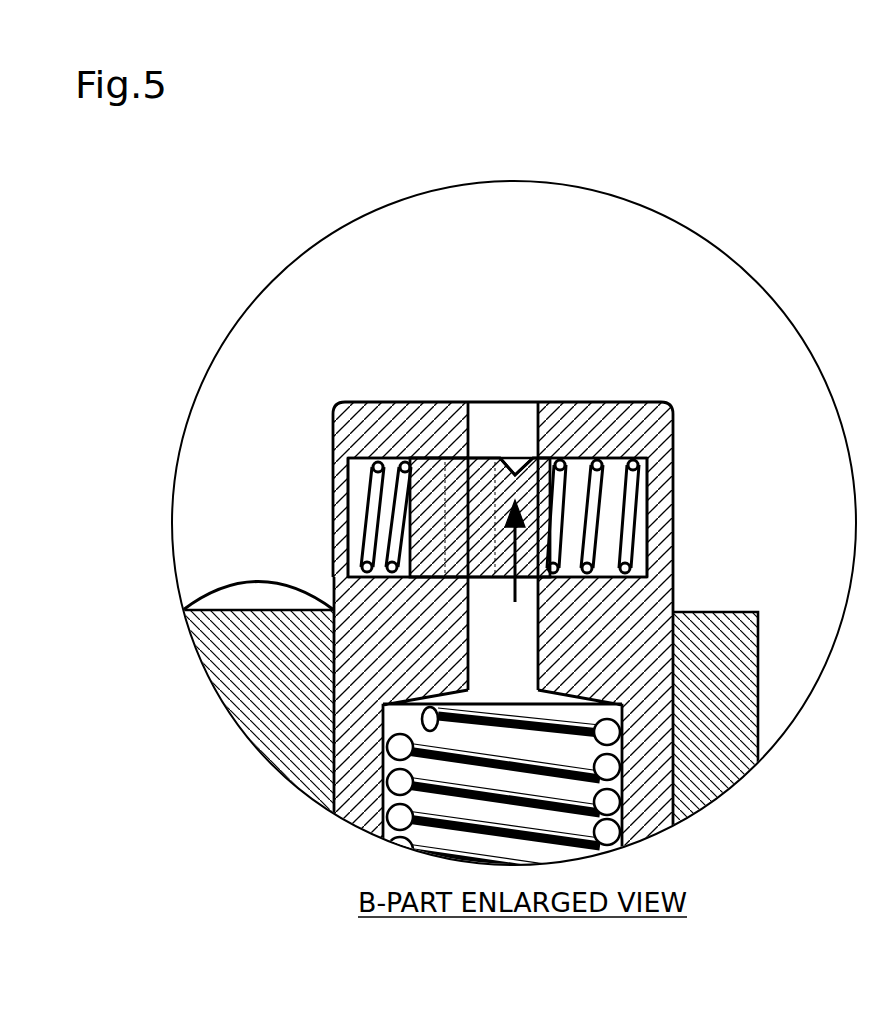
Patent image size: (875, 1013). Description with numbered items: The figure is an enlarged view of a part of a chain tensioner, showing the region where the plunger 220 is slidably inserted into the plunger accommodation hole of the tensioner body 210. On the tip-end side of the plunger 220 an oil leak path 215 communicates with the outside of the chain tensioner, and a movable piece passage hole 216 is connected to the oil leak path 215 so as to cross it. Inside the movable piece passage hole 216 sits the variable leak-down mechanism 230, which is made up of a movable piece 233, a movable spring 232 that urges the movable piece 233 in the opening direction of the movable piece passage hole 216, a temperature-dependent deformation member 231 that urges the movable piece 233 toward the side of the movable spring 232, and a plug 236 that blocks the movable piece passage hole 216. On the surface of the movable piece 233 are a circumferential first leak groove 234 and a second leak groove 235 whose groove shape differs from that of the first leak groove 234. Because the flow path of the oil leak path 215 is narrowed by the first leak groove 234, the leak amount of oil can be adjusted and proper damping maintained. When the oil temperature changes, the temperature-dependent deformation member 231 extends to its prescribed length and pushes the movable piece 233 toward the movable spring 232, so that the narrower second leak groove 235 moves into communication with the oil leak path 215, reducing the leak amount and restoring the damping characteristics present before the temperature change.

The tensioner body 210 is at (277, 715).
The oil leak path 215 is at (470, 650).
The movable piece passage hole 216 is at (348, 545).
The plunger 220 is at (363, 725).
The variable leak-down mechanism 230 is at (387, 63).
The temperature-dependent deformation member 231 is at (395, 453).
The movable spring 232 is at (600, 458).
The movable piece 233 is at (552, 457).
The first leak groove 234 is at (515, 474).
The second leak groove 235 is at (448, 460).
The plug 236 is at (344, 432).